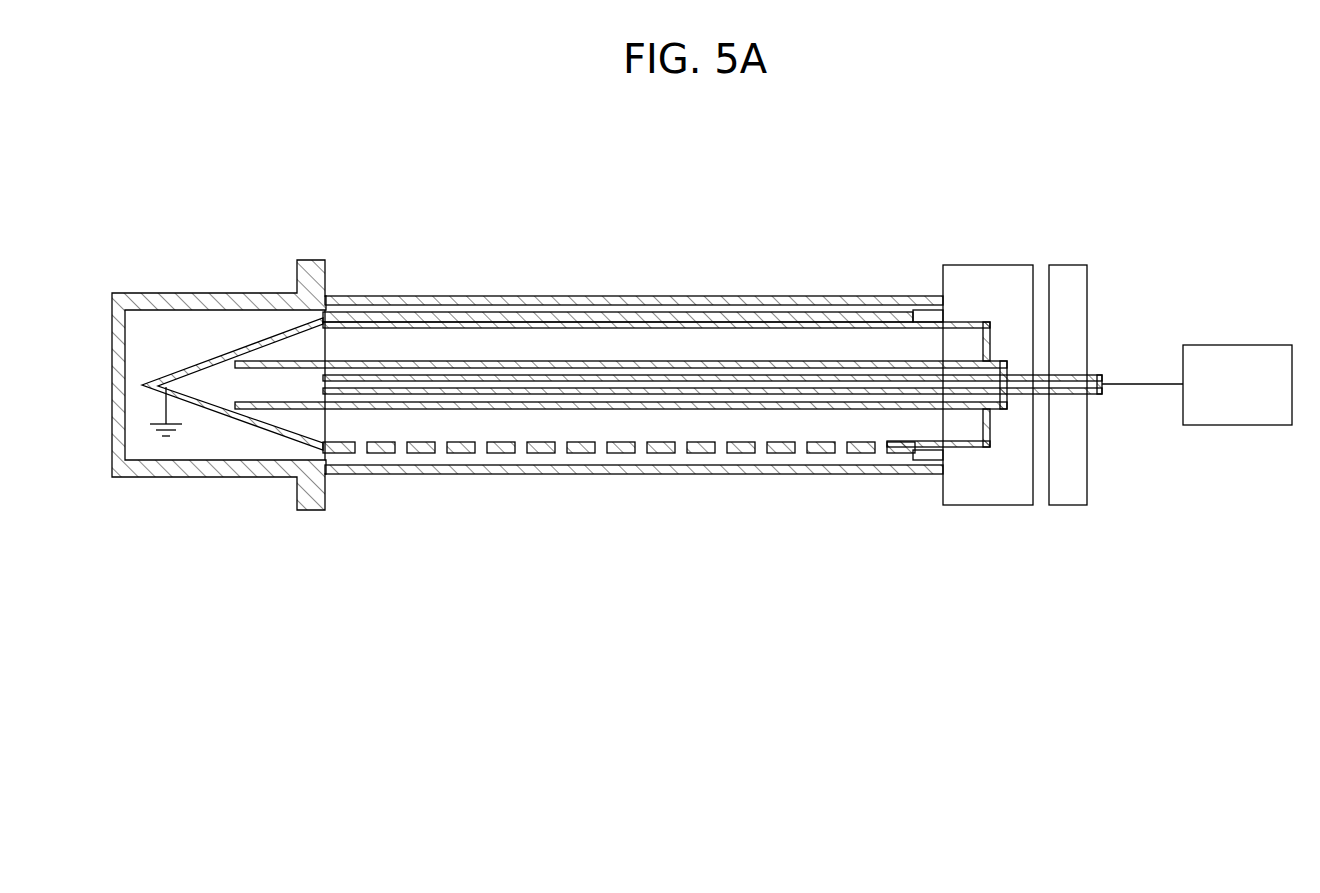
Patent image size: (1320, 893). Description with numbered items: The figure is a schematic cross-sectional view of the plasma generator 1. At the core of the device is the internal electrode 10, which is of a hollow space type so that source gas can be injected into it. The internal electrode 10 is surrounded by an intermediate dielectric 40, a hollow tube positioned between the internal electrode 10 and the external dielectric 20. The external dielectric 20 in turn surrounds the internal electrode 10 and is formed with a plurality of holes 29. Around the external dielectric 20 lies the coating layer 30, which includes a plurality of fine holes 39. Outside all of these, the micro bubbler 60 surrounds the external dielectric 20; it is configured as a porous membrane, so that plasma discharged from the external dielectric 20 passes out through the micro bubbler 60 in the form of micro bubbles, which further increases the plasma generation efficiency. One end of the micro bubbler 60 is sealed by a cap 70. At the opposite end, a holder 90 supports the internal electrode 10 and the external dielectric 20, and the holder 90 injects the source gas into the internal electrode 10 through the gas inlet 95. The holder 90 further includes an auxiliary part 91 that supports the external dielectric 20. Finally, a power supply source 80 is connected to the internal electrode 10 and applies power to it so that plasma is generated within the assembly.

The plasma generator 1 is at (663, 224).
The internal electrode 10 is at (1053, 394).
The external dielectric 20 is at (207, 358).
The holes 29 is at (450, 450).
The coating layer 30 is at (408, 312).
The fine holes 39 is at (438, 446).
The intermediate dielectric 40 is at (270, 366).
The micro bubbler 60 is at (680, 300).
The cap 70 is at (140, 296).
The power supply source 80 is at (1235, 360).
The holder 90 is at (1087, 298).
The auxiliary part 91 is at (930, 459).
The gas inlet 95 is at (1033, 282).